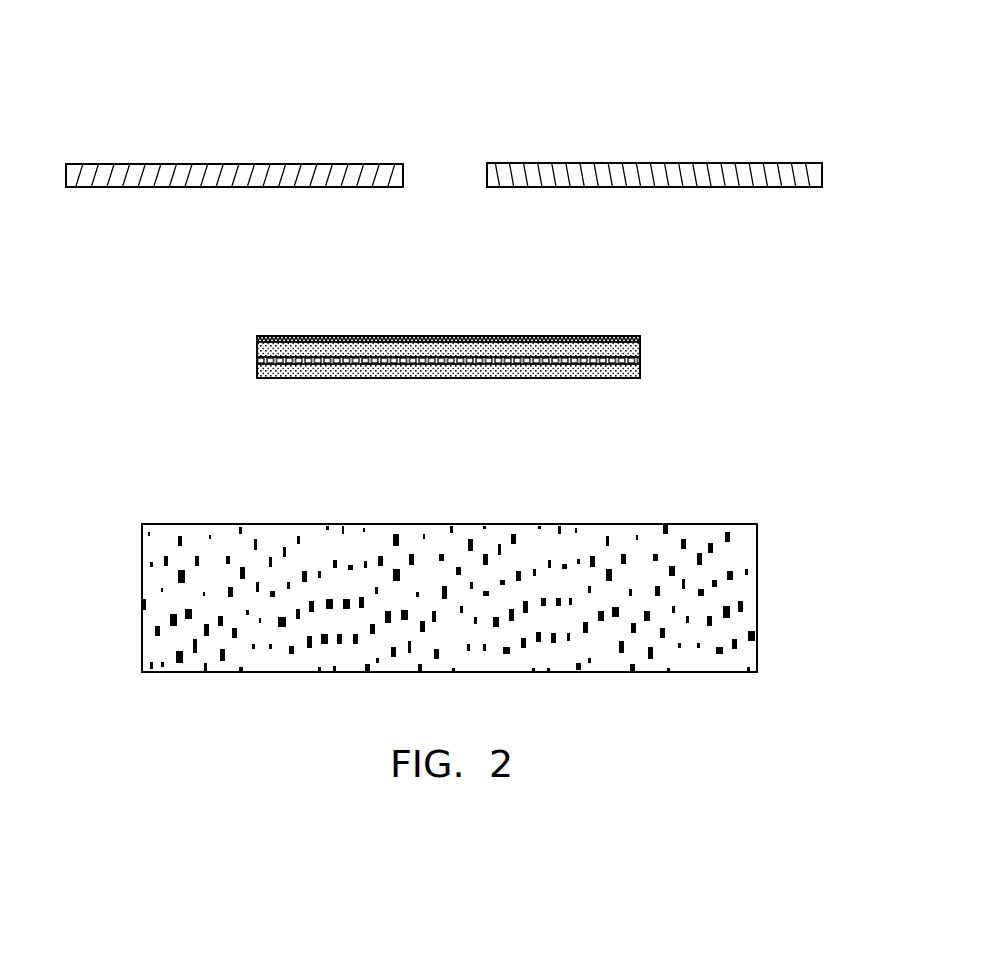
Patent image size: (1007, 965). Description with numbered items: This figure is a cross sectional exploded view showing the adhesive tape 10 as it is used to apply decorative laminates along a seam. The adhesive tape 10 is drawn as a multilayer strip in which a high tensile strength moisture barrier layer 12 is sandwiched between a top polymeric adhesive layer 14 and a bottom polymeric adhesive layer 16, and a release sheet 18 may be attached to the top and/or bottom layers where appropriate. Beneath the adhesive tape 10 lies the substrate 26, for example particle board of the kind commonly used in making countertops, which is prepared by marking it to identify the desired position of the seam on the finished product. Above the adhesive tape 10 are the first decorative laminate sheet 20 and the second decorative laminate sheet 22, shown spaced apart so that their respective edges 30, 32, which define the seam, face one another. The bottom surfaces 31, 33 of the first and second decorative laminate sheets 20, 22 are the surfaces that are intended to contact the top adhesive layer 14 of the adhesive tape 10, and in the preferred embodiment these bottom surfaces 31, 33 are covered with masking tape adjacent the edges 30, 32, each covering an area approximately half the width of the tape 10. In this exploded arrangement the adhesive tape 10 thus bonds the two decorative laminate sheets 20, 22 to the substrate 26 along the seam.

The adhesive tape 10 is at (458, 364).
The moisture barrier layer 12 is at (451, 376).
The top polymeric adhesive layer 14 is at (272, 337).
The bottom polymeric adhesive layer 16 is at (281, 376).
The release sheet 18 is at (596, 334).
The first decorative laminate sheet 20 is at (670, 162).
The second decorative laminate sheet 22 is at (213, 164).
The substrate 26 is at (207, 524).
The edge of first decorative laminate sheet 30 is at (486, 180).
The bottom surface of first decorative laminate sheet 31 is at (506, 188).
The edge of second decorative laminate sheet 32 is at (404, 164).
The bottom surface of second decorative laminate sheet 33 is at (381, 188).